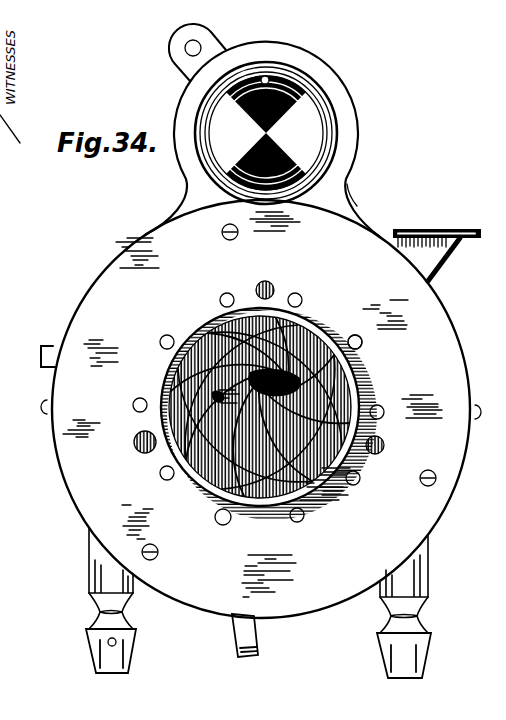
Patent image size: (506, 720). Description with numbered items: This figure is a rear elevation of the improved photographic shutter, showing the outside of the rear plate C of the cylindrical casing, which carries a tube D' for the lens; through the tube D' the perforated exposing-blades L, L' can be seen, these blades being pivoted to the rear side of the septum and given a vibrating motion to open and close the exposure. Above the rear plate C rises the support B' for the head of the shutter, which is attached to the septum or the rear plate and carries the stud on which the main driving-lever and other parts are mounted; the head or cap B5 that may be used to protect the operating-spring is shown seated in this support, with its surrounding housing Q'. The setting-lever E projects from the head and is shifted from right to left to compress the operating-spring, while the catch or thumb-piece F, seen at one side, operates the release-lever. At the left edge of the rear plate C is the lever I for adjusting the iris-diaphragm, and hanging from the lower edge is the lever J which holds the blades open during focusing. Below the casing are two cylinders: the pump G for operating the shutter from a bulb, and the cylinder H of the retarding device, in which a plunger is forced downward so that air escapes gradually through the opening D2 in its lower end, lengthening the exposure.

The setting-lever E is at (212, 42).
The housing Q' is at (262, 133).
The head or cap B5 is at (322, 110).
The support B' is at (364, 188).
The catch or thumb-piece F is at (452, 232).
The tube D' is at (269, 408).
The rear plate C is at (261, 409).
The perforated exposing-blade L is at (371, 361).
The perforated exposing-blade L' is at (214, 383).
The lever for adjusting the iris-diaphragm I is at (40, 356).
The cylinder of the retarding device H is at (90, 563).
The pump G is at (428, 572).
The opening D2 is at (108, 642).
The lever J is at (258, 641).